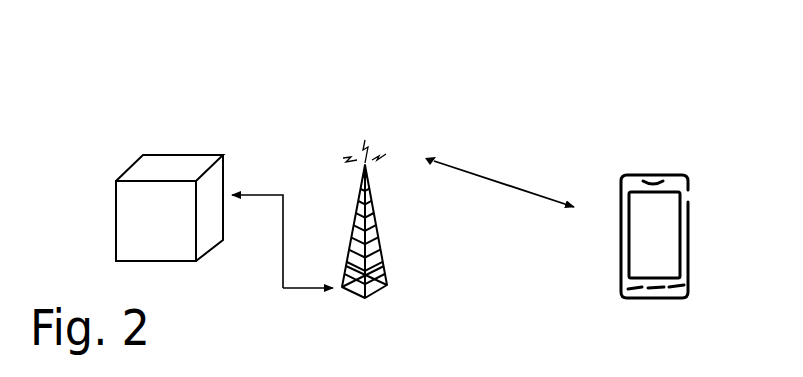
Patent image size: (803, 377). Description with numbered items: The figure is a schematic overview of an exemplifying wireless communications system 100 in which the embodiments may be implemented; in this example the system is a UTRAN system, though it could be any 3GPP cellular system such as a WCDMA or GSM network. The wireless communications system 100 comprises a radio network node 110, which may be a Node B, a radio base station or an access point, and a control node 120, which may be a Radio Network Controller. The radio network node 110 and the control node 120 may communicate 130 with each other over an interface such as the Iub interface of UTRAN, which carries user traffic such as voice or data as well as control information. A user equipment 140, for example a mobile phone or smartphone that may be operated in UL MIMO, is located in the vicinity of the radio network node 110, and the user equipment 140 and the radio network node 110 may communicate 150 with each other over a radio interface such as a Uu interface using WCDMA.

The wireless communications system 100 is at (375, 95).
The radio network node 110 is at (386, 239).
The control node 120 is at (169, 208).
The communication between radio network node and control node 130 is at (282, 227).
The user equipment 140 is at (654, 236).
The communication between user equipment and radio network node 150 is at (499, 176).